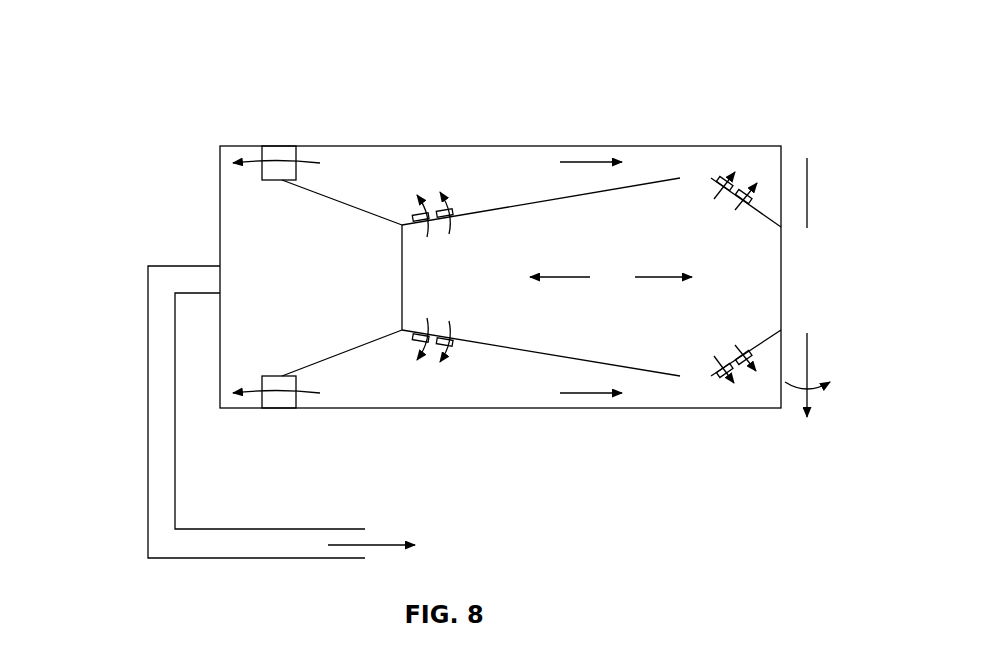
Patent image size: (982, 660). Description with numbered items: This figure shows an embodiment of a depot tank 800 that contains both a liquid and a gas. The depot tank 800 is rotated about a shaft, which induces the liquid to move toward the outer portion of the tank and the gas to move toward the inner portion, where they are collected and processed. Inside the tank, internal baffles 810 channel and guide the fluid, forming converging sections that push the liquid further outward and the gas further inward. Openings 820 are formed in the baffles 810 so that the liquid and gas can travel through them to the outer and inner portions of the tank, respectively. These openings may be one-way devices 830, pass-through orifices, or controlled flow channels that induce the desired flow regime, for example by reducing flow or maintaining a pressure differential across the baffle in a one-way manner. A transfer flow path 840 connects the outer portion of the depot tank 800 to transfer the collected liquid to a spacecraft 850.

The depot tank 800 is at (742, 68).
The internal baffles 810 is at (326, 196).
The openings 820 is at (430, 214).
The one-way devices 830 is at (280, 150).
The transfer flow path 840 is at (160, 477).
The spacecraft 850 is at (511, 542).